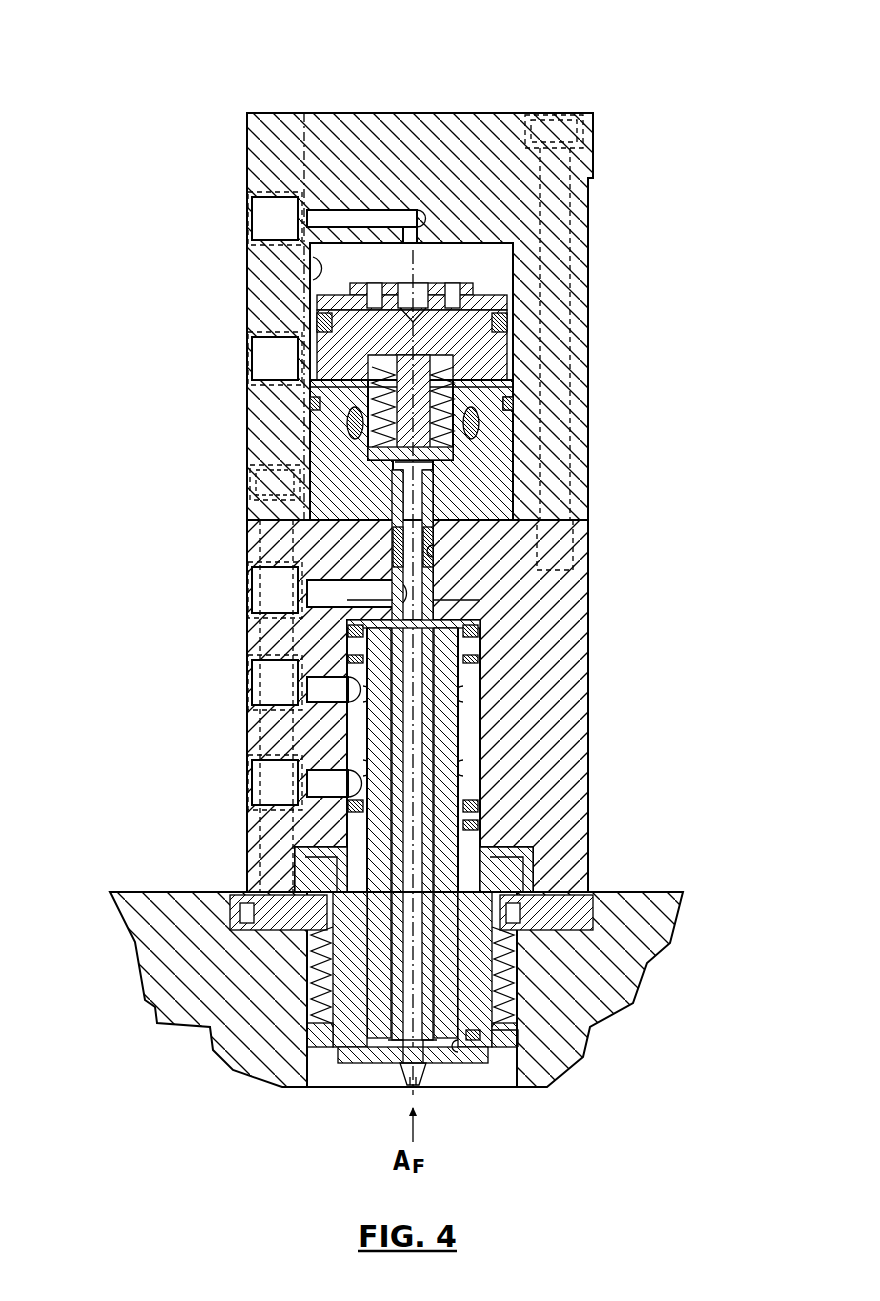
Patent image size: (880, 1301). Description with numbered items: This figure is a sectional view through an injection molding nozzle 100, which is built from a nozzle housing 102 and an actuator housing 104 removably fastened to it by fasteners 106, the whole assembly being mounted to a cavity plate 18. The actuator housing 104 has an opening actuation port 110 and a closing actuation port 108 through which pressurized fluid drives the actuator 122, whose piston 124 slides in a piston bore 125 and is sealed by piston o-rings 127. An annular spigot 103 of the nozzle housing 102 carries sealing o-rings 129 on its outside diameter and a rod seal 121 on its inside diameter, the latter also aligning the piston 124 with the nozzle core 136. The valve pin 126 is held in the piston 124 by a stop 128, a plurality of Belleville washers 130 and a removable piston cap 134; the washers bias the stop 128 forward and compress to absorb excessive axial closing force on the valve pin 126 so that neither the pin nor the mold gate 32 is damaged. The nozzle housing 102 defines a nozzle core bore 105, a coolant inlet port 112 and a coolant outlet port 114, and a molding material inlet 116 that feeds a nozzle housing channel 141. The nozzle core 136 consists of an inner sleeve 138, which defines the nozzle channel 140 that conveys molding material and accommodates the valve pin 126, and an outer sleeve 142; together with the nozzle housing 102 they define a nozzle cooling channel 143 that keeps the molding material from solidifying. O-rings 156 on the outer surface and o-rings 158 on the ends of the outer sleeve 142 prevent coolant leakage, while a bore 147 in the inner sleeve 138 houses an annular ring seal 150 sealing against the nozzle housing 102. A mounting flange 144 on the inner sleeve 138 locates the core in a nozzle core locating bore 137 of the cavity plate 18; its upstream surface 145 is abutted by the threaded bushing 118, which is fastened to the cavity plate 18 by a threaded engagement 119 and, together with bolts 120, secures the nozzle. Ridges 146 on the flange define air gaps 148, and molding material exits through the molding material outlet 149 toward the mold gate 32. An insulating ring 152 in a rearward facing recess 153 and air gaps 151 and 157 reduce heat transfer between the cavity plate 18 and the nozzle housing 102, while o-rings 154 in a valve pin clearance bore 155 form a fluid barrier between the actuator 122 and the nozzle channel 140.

The nozzle 100 is at (720, 130).
The nozzle housing 102 is at (560, 650).
The annular spigot 103 is at (480, 440).
The actuator housing 104 is at (588, 362).
The nozzle core bore 105 is at (345, 715).
The fasteners 106 is at (585, 225).
The closing actuation port 108 is at (250, 222).
The opening actuation port 110 is at (250, 355).
The coolant inlet port 112 is at (250, 685).
The coolant outlet port 114 is at (250, 780).
The molding material inlet 116 is at (250, 592).
The threaded bushing 118 is at (530, 890).
The threaded engagement 119 is at (555, 1040).
The bolts 120 is at (252, 492).
The rod seal 121 is at (315, 405).
The actuator 122 is at (520, 345).
The piston 124 is at (460, 470).
The piston bore 125 is at (330, 258).
The valve pin 126 is at (435, 585).
The piston o-rings 127 is at (505, 320).
The stop 128 is at (300, 480).
The sealing o-rings 129 is at (510, 405).
The Belleville washers 130 is at (350, 420).
The piston cap 134 is at (322, 322).
The nozzle core 136 is at (465, 700).
The nozzle core locating bore 137 is at (548, 1060).
The inner sleeve 138 is at (460, 770).
The nozzle channel 140 is at (510, 860).
The nozzle housing channel 141 is at (350, 578).
The outer sleeve 142 is at (440, 745).
The nozzle cooling channel 143 is at (470, 800).
The mounting flange 144 is at (470, 1085).
The upstream surface 145 is at (330, 990).
The ridges 146 is at (390, 1067).
The bore 147 is at (350, 640).
The air gaps 148 is at (445, 1080).
The molding material outlet 149 is at (425, 1070).
The annular ring seal 150 is at (440, 625).
The air gap 151 is at (300, 868).
The insulating ring 152 is at (595, 915).
The rearward facing recess 153 is at (250, 912).
The o-rings 154 is at (435, 540).
The valve pin clearance bore 155 is at (440, 560).
The o-rings 156 is at (470, 660).
The air gap 157 is at (560, 1010).
The o-rings 158 is at (348, 632).
The cavity plate 18 is at (170, 990).
The mold gate 32 is at (411, 1085).